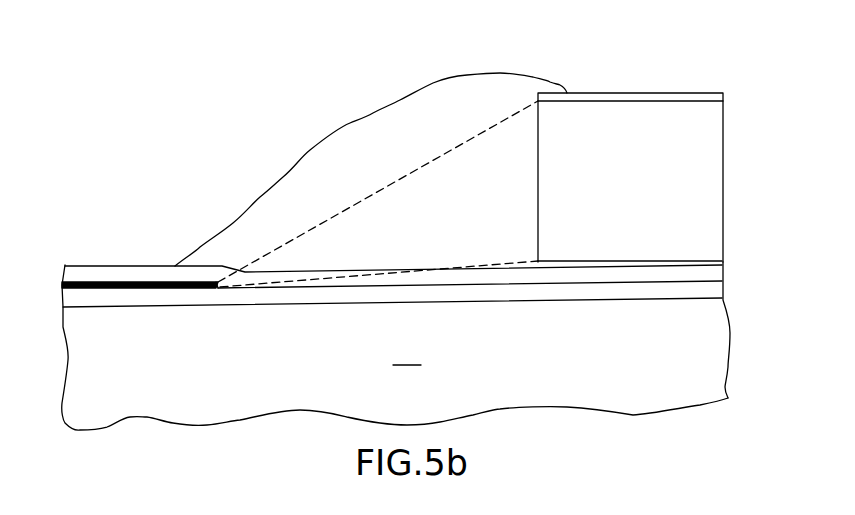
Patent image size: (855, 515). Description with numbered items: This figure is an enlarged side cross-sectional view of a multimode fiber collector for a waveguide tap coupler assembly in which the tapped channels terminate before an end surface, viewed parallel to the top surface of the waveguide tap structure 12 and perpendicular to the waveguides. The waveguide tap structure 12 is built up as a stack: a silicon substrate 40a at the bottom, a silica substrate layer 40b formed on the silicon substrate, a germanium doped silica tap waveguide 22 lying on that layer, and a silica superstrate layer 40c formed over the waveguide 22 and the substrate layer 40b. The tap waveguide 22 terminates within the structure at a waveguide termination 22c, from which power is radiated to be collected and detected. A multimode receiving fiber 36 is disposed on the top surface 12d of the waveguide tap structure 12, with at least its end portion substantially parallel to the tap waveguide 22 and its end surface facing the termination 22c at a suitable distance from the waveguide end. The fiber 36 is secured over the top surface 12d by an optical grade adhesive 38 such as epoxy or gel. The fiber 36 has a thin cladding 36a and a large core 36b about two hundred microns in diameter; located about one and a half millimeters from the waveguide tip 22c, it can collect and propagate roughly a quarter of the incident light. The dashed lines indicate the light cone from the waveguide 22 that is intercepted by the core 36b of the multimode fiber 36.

The waveguide tap structure 12 is at (713, 395).
The top surface 12d is at (315, 270).
The tap waveguide 22 is at (94, 282).
The waveguide termination 22c is at (220, 289).
The multimode receiving fiber 36 is at (708, 92).
The cladding 36a is at (632, 97).
The core 36b is at (597, 120).
The optical grade adhesive 38 is at (480, 93).
The silicon substrate 40a is at (407, 354).
The silica substrate layer 40b is at (312, 302).
The silica superstrate layer 40c is at (143, 275).